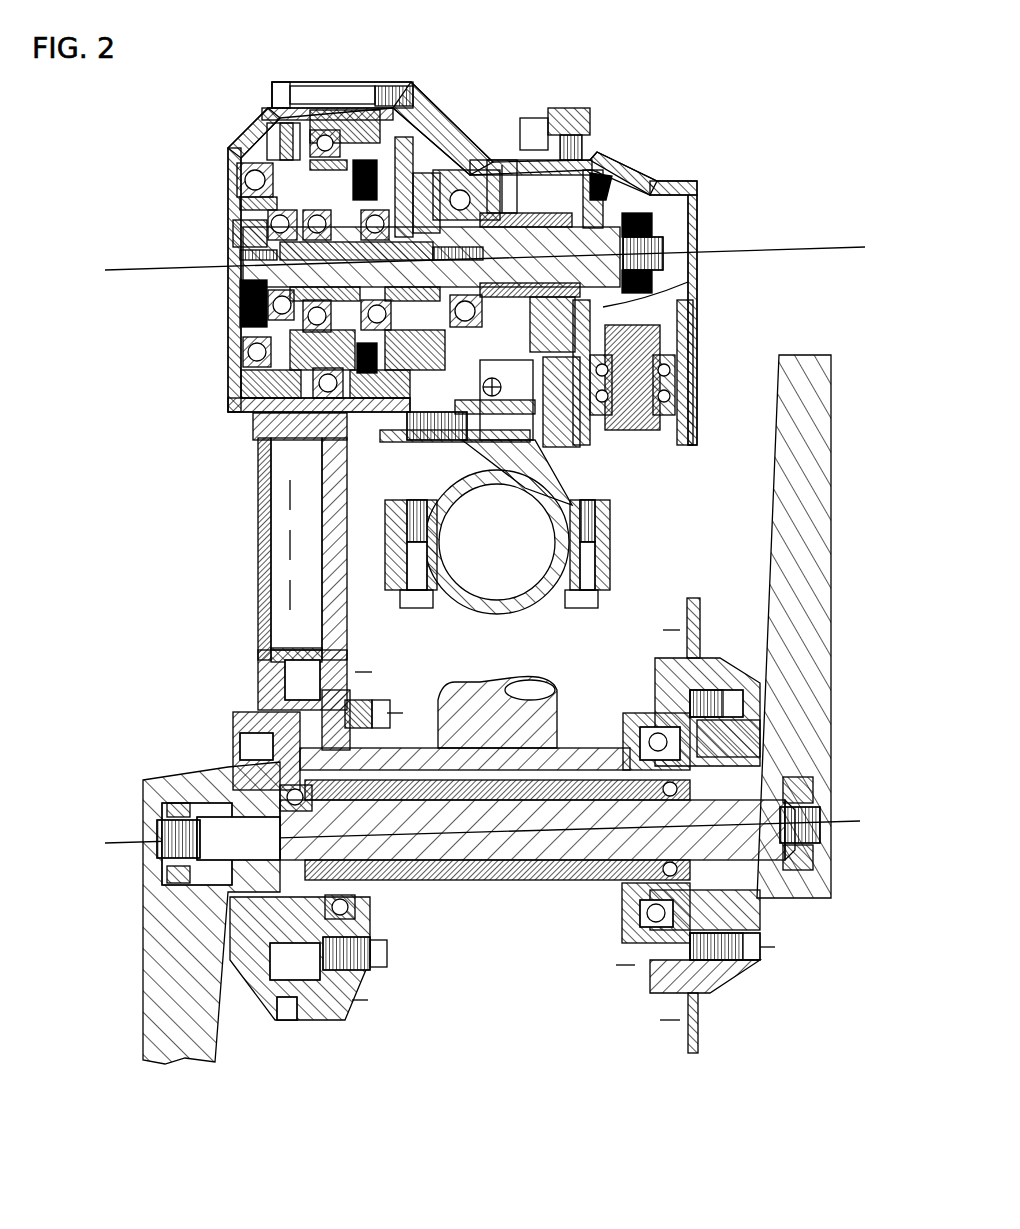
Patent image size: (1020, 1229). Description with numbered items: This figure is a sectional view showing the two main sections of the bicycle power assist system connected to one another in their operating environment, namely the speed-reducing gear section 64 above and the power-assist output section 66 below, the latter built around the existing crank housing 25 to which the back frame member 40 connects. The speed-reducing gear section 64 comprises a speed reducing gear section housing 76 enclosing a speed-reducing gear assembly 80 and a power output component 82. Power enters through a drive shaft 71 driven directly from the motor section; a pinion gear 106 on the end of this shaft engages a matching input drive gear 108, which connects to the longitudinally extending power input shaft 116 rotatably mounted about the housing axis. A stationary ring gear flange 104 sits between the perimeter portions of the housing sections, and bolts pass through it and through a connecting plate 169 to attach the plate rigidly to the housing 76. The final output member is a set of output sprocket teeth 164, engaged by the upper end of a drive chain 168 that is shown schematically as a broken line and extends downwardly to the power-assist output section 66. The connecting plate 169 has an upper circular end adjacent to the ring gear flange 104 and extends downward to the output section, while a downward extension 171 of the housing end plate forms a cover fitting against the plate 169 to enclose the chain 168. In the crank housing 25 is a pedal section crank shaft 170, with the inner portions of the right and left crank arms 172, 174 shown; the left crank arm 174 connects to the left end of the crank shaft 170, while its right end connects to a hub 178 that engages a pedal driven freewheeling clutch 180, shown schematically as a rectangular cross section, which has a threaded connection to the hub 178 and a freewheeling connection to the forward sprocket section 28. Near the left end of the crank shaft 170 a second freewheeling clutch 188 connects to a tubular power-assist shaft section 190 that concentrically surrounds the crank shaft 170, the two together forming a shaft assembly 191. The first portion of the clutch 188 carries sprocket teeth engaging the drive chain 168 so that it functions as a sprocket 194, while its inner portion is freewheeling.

The crank housing 25 is at (569, 905).
The forward sprocket section 28 is at (700, 607).
The back frame member 40 is at (566, 712).
The speed-reducing gear section 64 is at (626, 160).
The power-assist output section 66 is at (597, 723).
The drive shaft 71 is at (578, 440).
The speed reducing gear section housing 76 is at (437, 88).
The speed-reducing gear assembly 80 is at (442, 160).
The power output component 82 is at (205, 312).
The stationary ring gear flange 104 is at (348, 100).
The pinion gear 106 is at (662, 313).
The input drive gear 108 is at (688, 282).
The power input shaft 116 is at (598, 237).
The output sprocket teeth 164 is at (248, 396).
The drive chain 168 is at (283, 540).
The connecting plate 169 is at (338, 473).
The pedal section crank shaft 170 is at (495, 905).
The downward extension 171 is at (258, 492).
The right crank arm 172 is at (208, 1033).
The left crank arm 174 is at (820, 633).
The hub 178 is at (768, 778).
The pedal driven freewheeling clutch 180 is at (747, 748).
The second freewheeling clutch 188 is at (253, 750).
The power-assist shaft section 190 is at (450, 903).
The shaft assembly 191 is at (468, 985).
The sprocket 194 is at (283, 717).